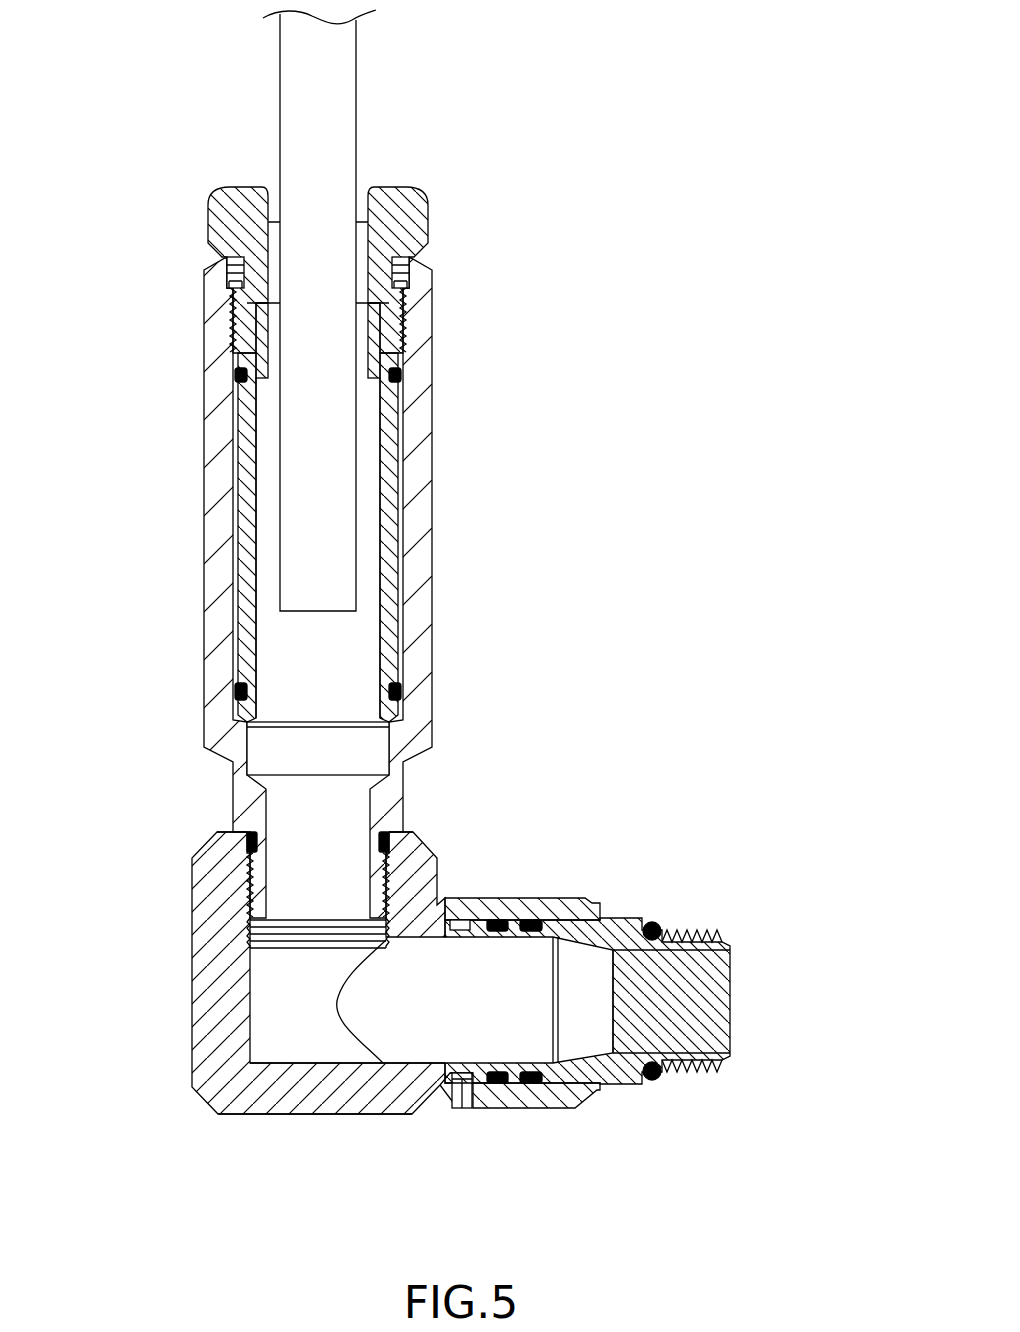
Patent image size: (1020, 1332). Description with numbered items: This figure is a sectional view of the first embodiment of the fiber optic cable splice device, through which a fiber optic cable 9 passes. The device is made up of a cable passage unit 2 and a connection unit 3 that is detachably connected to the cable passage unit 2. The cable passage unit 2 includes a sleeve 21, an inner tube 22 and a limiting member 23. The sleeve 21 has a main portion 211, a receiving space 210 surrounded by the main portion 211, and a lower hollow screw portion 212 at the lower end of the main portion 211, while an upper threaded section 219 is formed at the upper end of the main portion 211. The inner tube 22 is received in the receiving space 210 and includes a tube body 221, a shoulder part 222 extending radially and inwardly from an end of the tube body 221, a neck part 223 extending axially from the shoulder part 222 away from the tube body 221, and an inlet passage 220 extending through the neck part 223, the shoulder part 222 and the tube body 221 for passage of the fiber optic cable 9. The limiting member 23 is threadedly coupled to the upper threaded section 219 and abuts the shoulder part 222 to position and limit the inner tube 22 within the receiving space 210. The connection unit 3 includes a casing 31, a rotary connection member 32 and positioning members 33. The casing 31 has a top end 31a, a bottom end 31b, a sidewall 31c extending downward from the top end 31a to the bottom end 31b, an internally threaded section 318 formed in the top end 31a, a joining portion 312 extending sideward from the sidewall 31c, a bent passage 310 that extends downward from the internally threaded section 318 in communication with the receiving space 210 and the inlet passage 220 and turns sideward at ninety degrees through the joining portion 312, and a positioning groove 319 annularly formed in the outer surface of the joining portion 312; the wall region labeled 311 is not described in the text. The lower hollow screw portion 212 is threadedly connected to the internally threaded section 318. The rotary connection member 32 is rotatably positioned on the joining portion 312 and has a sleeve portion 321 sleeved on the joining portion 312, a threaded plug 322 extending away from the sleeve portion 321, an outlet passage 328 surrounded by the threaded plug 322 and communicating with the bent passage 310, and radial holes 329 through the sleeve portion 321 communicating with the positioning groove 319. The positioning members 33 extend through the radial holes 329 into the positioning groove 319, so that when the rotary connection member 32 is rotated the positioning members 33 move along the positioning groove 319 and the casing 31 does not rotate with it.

The fiber optic cable 9 is at (342, 72).
The cable passage unit 2 is at (443, 163).
The sleeve 21 is at (162, 507).
The main portion 211 is at (212, 587).
The limiting member 23 is at (208, 205).
The upper threaded section 219 is at (227, 292).
The neck part 223 is at (230, 329).
The receiving space 210 is at (367, 747).
The lower hollow screw portion 212 is at (392, 856).
The inner tube 22 is at (427, 575).
The tube body 221 is at (393, 457).
The shoulder part 222 is at (393, 351).
The inlet passage 220 is at (370, 522).
The connection unit 3 is at (148, 956).
The casing 31 is at (159, 1095).
The side wall 311 is at (193, 913).
The sidewall 31c is at (440, 882).
The bent passage 310 is at (268, 999).
The internally threaded section 318 is at (243, 868).
The top end 31a is at (217, 832).
The bottom end 31b is at (263, 1116).
The sleeve portion 321 is at (552, 897).
The joining portion 312 is at (540, 1085).
The radial holes 329 is at (452, 1108).
The positioning members 33 is at (465, 1110).
The rotary connection member 32 is at (704, 1100).
The threaded plug 322 is at (695, 920).
The outlet passage 328 is at (693, 1047).
The positioning groove 319 is at (480, 1093).